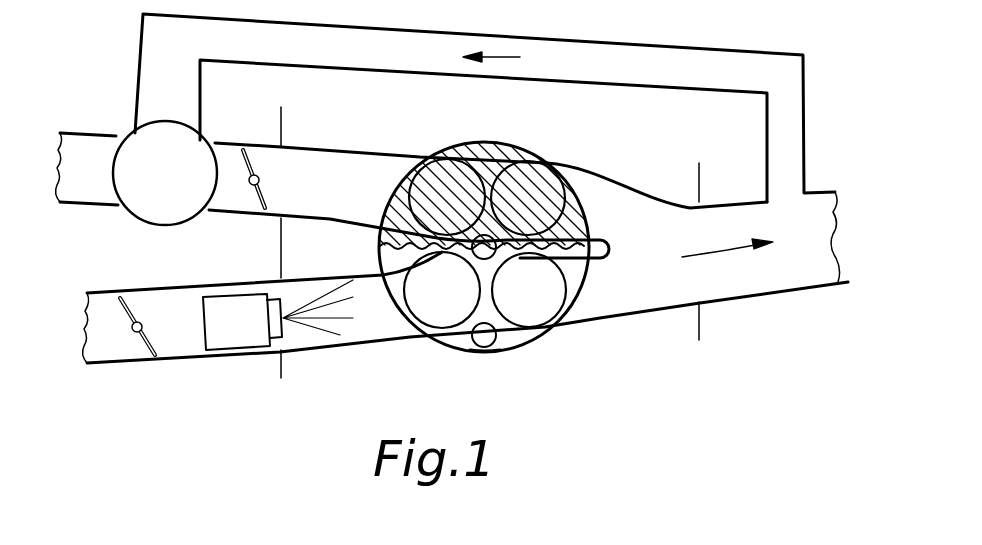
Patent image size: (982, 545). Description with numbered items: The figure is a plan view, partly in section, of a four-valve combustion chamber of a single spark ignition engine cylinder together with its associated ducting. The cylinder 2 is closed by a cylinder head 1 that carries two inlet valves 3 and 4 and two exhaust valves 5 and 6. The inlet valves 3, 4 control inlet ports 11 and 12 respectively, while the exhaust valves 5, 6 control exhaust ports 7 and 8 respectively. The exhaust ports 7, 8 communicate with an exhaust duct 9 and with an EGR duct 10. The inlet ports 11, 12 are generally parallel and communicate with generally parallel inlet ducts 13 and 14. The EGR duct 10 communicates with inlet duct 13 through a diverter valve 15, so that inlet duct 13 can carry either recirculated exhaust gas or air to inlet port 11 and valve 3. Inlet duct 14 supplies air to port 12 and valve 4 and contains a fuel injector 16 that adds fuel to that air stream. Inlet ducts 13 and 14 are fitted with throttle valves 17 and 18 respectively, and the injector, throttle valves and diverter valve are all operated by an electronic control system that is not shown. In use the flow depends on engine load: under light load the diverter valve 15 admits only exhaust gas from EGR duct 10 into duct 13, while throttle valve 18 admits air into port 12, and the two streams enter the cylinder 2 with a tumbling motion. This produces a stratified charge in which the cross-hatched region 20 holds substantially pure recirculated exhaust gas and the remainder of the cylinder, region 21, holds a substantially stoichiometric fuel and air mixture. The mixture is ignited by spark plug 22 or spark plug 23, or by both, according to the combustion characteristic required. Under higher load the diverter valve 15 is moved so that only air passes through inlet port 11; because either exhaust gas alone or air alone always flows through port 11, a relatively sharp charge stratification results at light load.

The cylinder head 1 is at (287, 240).
The cylinder 2 is at (527, 310).
The inlet valve 3 is at (427, 190).
The inlet valve 4 is at (428, 300).
The exhaust valve 5 is at (550, 192).
The exhaust valve 6 is at (547, 293).
The exhaust port 7 is at (628, 200).
The exhaust port 8 is at (615, 283).
The exhaust duct 9 is at (805, 257).
The EGR duct 10 is at (792, 130).
The inlet port 11 is at (330, 178).
The inlet port 12 is at (343, 325).
The inlet duct 13 is at (222, 165).
The inlet duct 14 is at (182, 328).
The diverter valve 15 is at (132, 163).
The fuel injector 16 is at (277, 348).
The throttle valve 17 is at (250, 160).
The throttle valve 18 is at (143, 338).
The region 20 is at (490, 160).
The region 21 is at (463, 335).
The spark plug 22 is at (484, 335).
The spark plug 23 is at (484, 255).